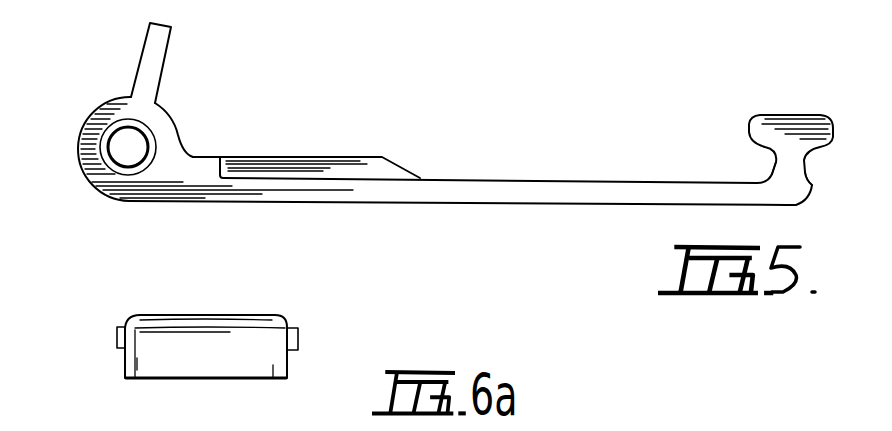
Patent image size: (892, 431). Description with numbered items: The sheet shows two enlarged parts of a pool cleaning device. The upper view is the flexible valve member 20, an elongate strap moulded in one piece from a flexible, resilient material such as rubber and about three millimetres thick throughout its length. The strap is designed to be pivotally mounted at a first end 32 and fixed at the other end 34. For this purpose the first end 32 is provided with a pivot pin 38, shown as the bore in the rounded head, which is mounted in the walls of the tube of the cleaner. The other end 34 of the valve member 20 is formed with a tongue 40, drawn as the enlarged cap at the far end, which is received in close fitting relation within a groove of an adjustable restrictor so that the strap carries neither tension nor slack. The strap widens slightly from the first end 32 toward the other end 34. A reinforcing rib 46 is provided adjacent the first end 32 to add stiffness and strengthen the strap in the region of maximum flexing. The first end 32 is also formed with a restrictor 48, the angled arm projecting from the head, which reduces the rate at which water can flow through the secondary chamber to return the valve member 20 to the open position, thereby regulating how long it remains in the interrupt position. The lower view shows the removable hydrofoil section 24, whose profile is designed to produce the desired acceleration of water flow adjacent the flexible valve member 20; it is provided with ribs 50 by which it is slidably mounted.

In FIG. 5, the flexible valve member 20 is at (482, 150).
In FIG. 5, the first end 32 is at (80, 124).
In FIG. 5, the other end 34 is at (796, 190).
In FIG. 5, the pivot pin 38 is at (149, 138).
In FIG. 5, the tongue 40 is at (772, 134).
In FIG. 5, the reinforcing rib 46 is at (303, 168).
In FIG. 5, the restrictor 48 is at (134, 54).
In FIG. 6a, the hydrofoil section 24 is at (244, 306).
In FIG. 6a, the ribs 50 is at (118, 342).